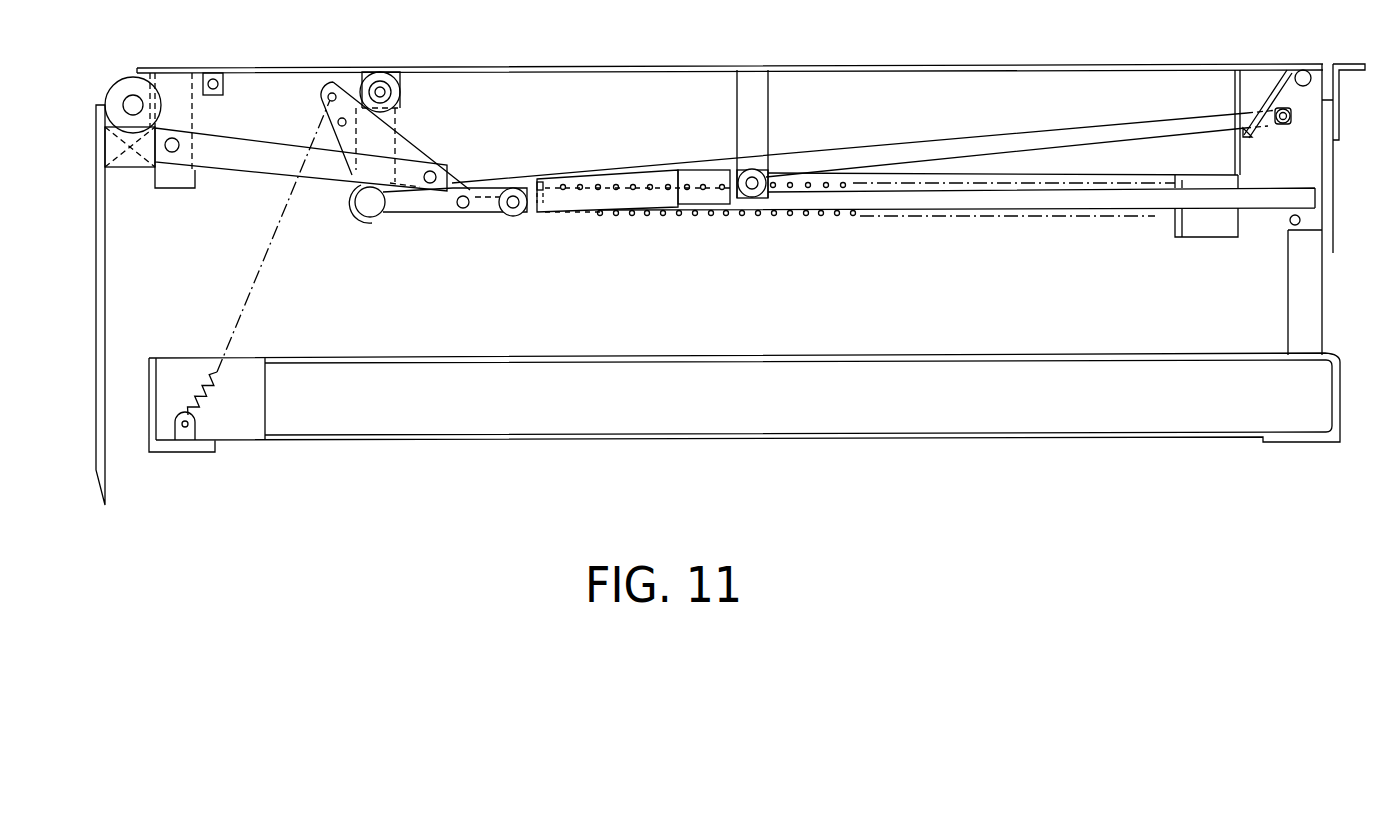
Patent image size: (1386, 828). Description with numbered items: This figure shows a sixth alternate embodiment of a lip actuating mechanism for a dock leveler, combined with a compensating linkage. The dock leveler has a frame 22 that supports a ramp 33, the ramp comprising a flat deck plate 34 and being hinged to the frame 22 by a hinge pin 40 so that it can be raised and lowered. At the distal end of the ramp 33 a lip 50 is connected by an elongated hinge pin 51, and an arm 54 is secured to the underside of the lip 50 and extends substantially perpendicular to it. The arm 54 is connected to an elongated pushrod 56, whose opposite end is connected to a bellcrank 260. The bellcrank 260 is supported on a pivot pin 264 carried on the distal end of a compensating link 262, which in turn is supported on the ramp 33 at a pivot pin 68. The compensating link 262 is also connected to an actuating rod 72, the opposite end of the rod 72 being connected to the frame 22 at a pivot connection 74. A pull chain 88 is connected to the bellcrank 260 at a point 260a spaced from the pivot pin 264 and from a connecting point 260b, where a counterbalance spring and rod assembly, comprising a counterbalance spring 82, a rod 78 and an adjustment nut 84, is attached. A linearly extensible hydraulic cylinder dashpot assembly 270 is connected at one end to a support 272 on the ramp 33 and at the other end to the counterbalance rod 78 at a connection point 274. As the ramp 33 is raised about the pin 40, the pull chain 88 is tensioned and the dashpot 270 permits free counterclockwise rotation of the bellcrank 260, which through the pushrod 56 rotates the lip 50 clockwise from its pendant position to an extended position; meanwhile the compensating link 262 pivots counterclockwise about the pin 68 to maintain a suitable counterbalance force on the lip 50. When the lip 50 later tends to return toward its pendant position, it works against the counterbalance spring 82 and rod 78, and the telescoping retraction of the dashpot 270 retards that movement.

The frame 22 is at (974, 348).
The dock leveler ramp 33 is at (468, 62).
The deck plate 34 is at (583, 66).
The hinge means 40 is at (1303, 70).
The lip 50 is at (96, 210).
The hinge pin 51 is at (130, 104).
The arm 54 is at (137, 170).
The pushrod link 56 is at (263, 162).
The pivot pin 68 is at (382, 80).
The actuating rod 72 is at (597, 172).
The pivot connection 74 is at (1284, 128).
The rod 78 is at (907, 203).
The counterbalance spring 82 is at (742, 218).
The adjustment nut 84 is at (540, 180).
The pull chain 88 is at (233, 325).
The bellcrank 260 is at (418, 152).
The connecting point for pull chain 260a is at (332, 88).
The connecting point for counterbalance spring and rod assembly 260b is at (478, 216).
The compensating link 262 is at (353, 193).
The pivot pin 264 is at (372, 215).
The hydraulic cylinder dashpot assembly 270 is at (649, 224).
The support 272 is at (770, 100).
The connection point 274 is at (513, 188).